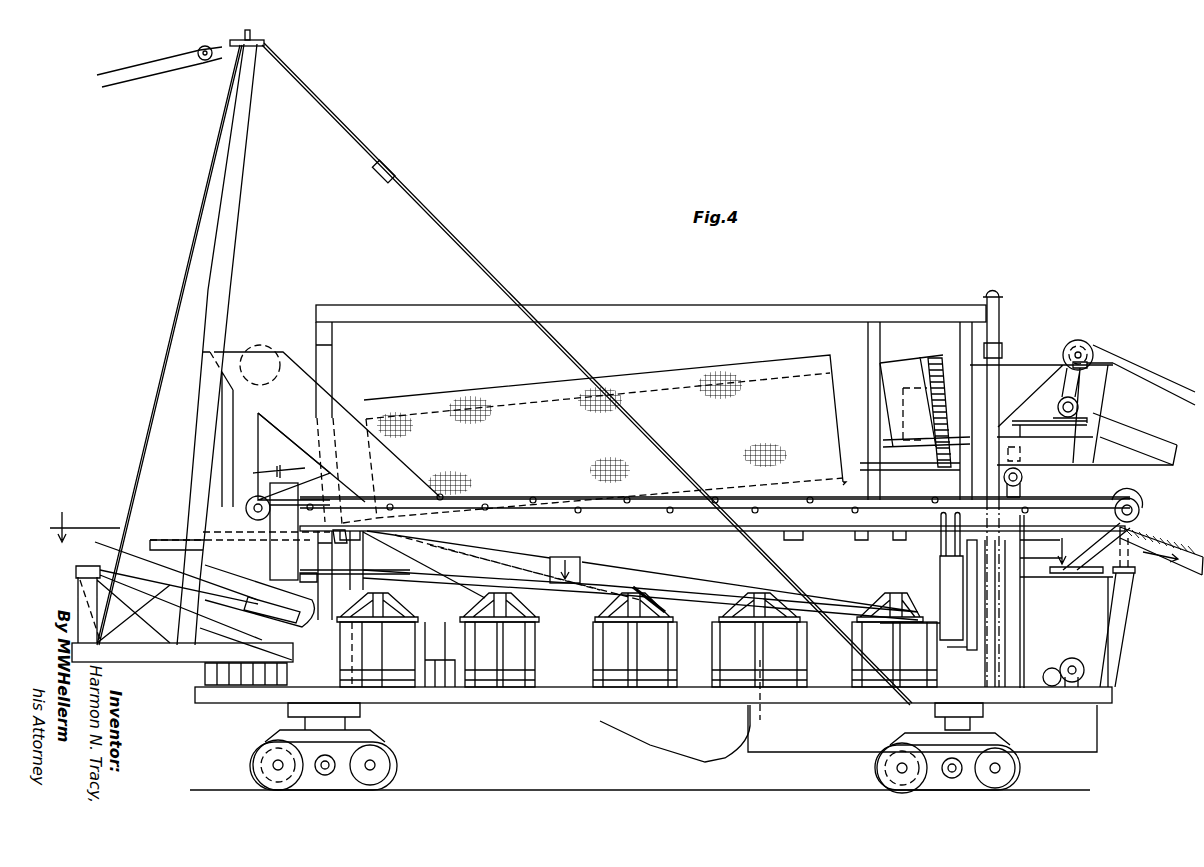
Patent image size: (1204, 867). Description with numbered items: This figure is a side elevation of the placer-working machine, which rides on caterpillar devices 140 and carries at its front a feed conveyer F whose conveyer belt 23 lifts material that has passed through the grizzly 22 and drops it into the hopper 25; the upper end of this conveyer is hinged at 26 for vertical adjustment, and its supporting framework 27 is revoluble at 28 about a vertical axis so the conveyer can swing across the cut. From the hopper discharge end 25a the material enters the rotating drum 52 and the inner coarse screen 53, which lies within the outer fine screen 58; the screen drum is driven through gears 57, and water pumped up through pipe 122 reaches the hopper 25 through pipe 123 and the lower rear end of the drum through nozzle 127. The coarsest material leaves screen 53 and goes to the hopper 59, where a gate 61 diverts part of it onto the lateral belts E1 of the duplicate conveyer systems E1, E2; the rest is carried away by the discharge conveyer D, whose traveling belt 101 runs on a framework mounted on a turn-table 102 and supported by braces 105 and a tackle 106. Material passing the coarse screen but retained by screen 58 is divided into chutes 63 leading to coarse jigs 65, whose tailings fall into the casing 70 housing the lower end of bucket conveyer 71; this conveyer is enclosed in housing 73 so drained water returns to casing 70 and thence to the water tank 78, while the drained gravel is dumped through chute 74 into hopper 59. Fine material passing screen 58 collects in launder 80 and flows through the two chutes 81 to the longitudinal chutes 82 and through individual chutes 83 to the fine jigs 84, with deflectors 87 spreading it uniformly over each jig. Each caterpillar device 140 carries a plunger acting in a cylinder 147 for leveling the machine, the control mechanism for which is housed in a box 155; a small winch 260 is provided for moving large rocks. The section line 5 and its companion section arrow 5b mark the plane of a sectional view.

The section line 5 is at (85, 518).
The section line 5 (right) 5b is at (1100, 526).
The grizzly 22 is at (1087, 431).
The conveyer belt 23 is at (1118, 370).
The hopper 25 is at (1041, 396).
The hopper discharge end 25a is at (915, 403).
The hinge 26 is at (1022, 482).
The framework 27 is at (1135, 439).
The vertical axis pivot 28 is at (1025, 458).
The rotating drum 52 is at (848, 426).
The inner coarse screen 53 is at (712, 378).
The gears 57 is at (935, 358).
The outer fine screen 58 is at (510, 395).
The hopper 59 is at (160, 546).
The gate 61 is at (582, 562).
The chutes 63 is at (355, 575).
The coarse jigs 65 is at (440, 620).
The box or casing 70 is at (653, 724).
The bucket conveyer 71 is at (428, 482).
The housing 73 is at (326, 457).
The chute 74 is at (321, 426).
The water tank 78 is at (922, 706).
The launder 80 is at (805, 495).
The chutes 81 is at (622, 556).
The longitudinal chutes 82 is at (706, 598).
The individual chutes 83 is at (652, 592).
The fine jigs 84 is at (400, 664).
The movable gates or deflectors 87 is at (640, 585).
The traveling belt 101 is at (135, 525).
The turn-table 102 is at (155, 660).
The braces 105 is at (452, 240).
The tackle 106 is at (136, 78).
The pipe 122 is at (990, 638).
The pipe 123 is at (1003, 342).
The nozzle 127 is at (279, 461).
The caterpillar devices 140 is at (398, 762).
The cylinder 147 is at (948, 603).
The box 155 is at (940, 568).
The small winch 260 is at (1085, 665).
The discharge conveyer D is at (108, 538).
The lateral belts E1 is at (240, 571).
The conveyer system element E2 is at (550, 497).
The feed conveyer F is at (1171, 376).